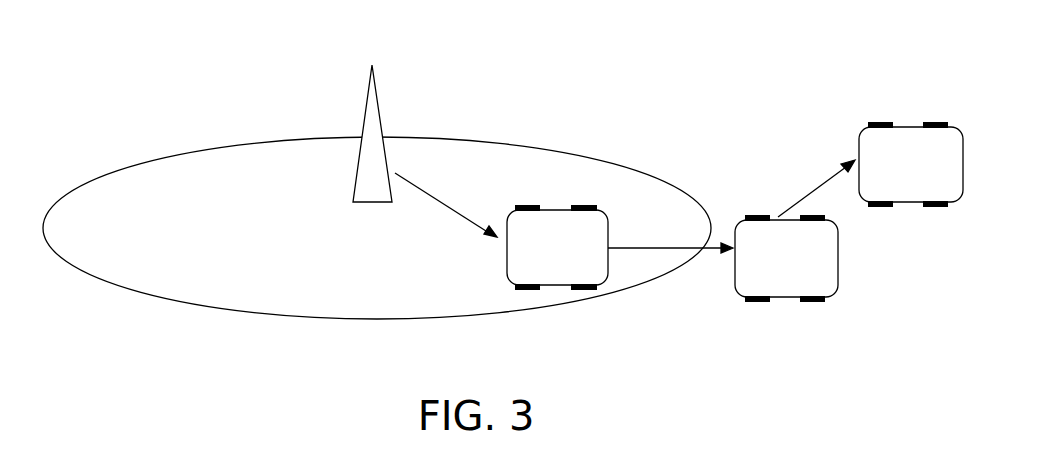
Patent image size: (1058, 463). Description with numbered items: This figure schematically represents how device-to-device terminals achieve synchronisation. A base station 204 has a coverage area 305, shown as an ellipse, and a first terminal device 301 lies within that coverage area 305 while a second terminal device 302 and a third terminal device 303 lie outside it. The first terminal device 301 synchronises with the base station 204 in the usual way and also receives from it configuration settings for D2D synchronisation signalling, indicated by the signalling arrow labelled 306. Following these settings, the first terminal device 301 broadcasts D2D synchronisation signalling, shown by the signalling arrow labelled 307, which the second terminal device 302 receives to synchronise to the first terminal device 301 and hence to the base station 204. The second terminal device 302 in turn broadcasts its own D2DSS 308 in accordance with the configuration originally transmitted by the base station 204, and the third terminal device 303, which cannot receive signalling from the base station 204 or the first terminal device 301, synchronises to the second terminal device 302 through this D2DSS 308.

The base station 204 is at (368, 110).
The coverage area 305 is at (73, 237).
The signalling arrow for D2D synchronisation configuration 306 is at (415, 187).
The first terminal device 301 is at (546, 275).
The D2DSS from first terminal device 307 is at (622, 247).
The second terminal device 302 is at (769, 287).
The D2DSS from second terminal device 308 is at (825, 178).
The third terminal device 303 is at (889, 196).